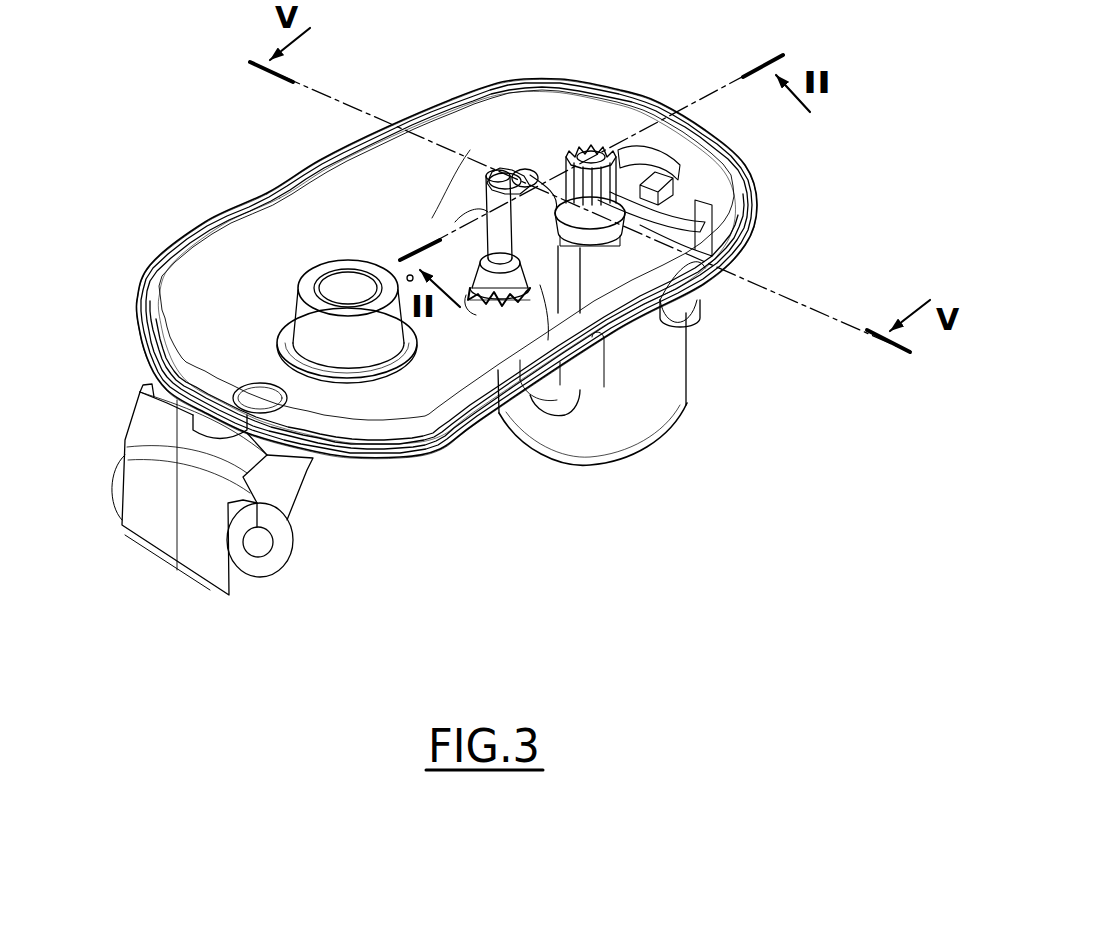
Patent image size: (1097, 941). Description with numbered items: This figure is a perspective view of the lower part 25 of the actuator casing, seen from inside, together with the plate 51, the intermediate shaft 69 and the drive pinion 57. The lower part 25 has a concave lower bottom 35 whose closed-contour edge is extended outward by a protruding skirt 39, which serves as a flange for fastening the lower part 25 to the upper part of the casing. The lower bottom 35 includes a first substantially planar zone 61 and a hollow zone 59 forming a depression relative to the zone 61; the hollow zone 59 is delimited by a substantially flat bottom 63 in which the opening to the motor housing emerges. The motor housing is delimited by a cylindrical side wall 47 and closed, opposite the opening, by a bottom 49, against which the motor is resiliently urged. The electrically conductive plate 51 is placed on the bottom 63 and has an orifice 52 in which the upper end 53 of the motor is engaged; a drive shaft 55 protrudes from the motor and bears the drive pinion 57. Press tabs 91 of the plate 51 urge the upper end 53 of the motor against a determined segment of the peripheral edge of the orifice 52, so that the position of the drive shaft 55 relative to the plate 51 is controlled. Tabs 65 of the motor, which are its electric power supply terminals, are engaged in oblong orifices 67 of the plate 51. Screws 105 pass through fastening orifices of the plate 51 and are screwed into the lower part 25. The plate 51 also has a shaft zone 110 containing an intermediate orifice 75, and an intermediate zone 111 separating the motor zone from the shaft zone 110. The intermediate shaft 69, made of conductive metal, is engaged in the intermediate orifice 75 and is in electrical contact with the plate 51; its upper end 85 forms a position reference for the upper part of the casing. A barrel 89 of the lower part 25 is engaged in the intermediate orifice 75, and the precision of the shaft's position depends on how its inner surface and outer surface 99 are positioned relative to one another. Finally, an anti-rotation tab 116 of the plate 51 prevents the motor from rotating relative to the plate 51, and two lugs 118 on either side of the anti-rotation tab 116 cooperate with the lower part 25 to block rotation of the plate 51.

The lower part 25 is at (138, 306).
The lower bottom 35 is at (200, 308).
The protruding skirt 39 is at (178, 352).
The side wall 47 is at (677, 393).
The bottom 49 is at (557, 457).
The plate 51 is at (505, 303).
The orifice 52 is at (627, 232).
The upper end 53 is at (685, 225).
The drive shaft 55 is at (592, 163).
The drive pinion 57 is at (620, 170).
The hollow zone 59 is at (486, 216).
The first substantially planar zone 61 is at (362, 328).
The bottom 63 is at (498, 178).
The tabs 65 is at (538, 175).
The oblong orifices 67 is at (490, 166).
The intermediate shaft 69 is at (488, 232).
The intermediate orifice 75 is at (502, 306).
The upper end 85 is at (493, 175).
The barrel 89 is at (482, 304).
The press tabs 91 is at (537, 180).
The outer surface 99 is at (582, 255).
The screws 105 is at (540, 182).
The shaft zone 110 is at (466, 310).
The intermediate zone 111 is at (523, 270).
The anti-rotation tab 116 is at (690, 208).
The lugs 118 is at (700, 188).